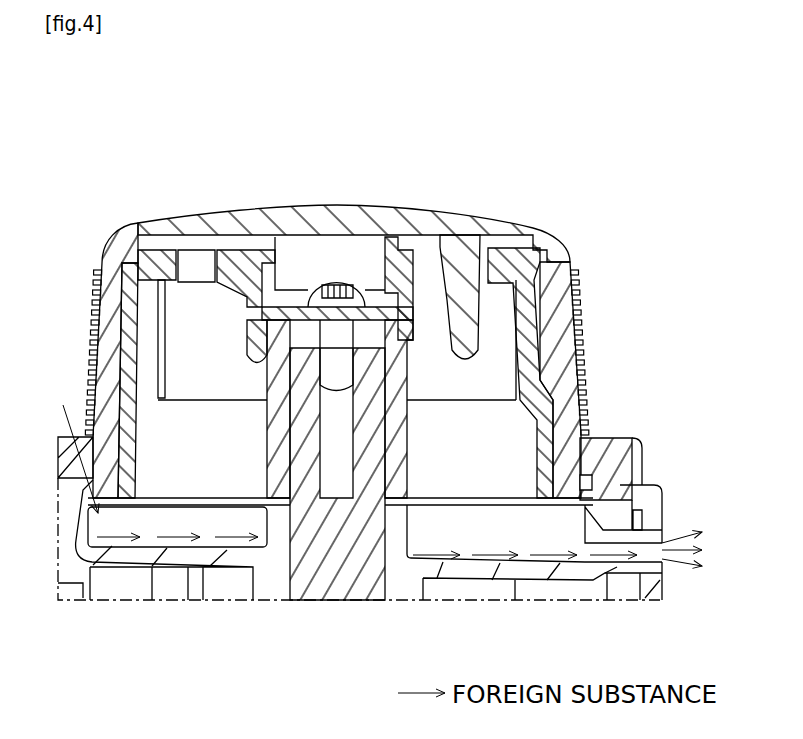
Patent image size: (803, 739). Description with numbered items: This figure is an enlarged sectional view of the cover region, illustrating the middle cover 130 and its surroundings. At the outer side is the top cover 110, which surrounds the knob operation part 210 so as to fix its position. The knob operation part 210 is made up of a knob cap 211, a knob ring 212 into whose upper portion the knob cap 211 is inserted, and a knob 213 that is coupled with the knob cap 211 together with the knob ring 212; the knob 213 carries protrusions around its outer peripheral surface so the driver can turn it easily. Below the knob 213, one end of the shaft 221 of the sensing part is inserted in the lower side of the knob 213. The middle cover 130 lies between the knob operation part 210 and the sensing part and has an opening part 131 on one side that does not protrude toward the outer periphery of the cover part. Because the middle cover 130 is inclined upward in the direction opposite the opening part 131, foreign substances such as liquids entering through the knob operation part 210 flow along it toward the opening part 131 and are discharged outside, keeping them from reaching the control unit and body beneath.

The knob operation part 210 is at (585, 113).
The knob cap 211 is at (425, 224).
The knob ring 212 is at (556, 250).
The knob 213 is at (568, 322).
The top cover 110 is at (648, 500).
The opening part 131 is at (647, 537).
The middle cover 130 is at (172, 557).
The shaft 221 is at (313, 580).